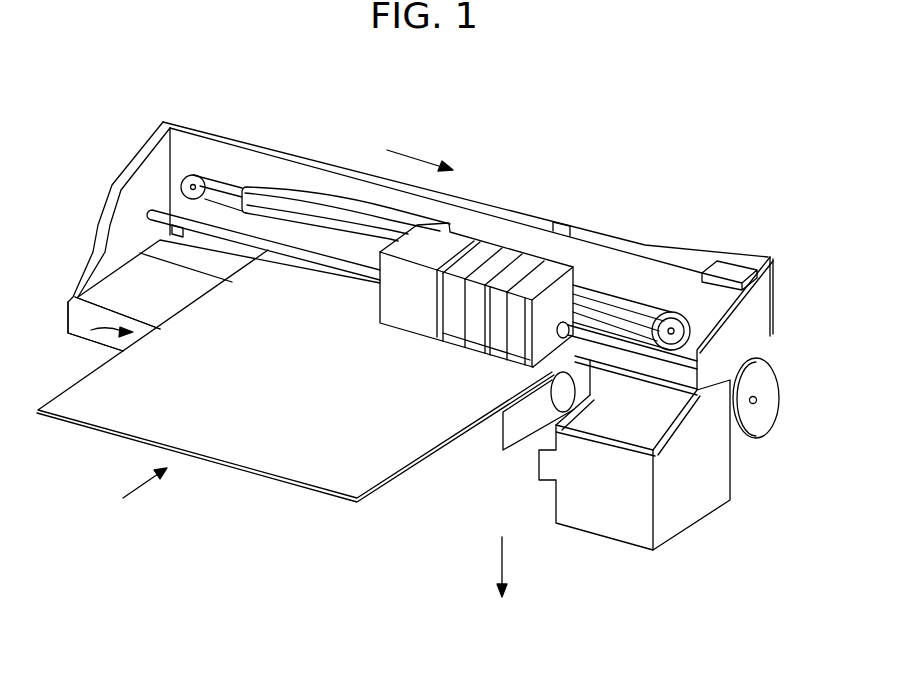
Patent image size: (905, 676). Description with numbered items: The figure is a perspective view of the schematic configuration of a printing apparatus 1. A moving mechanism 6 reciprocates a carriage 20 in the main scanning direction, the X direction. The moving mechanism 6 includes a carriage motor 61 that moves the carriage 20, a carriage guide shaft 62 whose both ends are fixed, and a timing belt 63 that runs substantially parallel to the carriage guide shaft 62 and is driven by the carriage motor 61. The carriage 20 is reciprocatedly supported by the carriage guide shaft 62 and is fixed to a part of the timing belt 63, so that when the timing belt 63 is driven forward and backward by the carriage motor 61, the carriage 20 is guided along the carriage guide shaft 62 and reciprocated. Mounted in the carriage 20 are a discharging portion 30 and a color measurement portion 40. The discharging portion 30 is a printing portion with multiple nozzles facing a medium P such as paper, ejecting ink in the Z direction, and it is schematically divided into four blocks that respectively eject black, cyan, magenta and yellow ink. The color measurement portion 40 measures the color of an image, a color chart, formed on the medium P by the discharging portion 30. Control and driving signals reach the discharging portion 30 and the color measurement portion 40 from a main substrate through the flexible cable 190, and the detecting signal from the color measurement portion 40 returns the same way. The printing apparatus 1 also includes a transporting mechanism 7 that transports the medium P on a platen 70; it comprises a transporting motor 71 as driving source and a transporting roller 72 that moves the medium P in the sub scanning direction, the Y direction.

The printing apparatus 1 is at (707, 100).
The moving mechanism 6 is at (683, 303).
The transporting mechanism 7 is at (92, 331).
The carriage 20 is at (405, 497).
The discharging portion 30 is at (490, 336).
The color measurement portion 40 is at (418, 313).
The carriage motor 61 is at (670, 314).
The carriage guide shaft 62 is at (619, 347).
The timing belt 63 is at (243, 190).
The platen 70 is at (160, 298).
The transporting motor 71 is at (757, 413).
The transporting roller 72 is at (567, 393).
The flexible cable 190 is at (283, 194).
The medium P is at (161, 419).